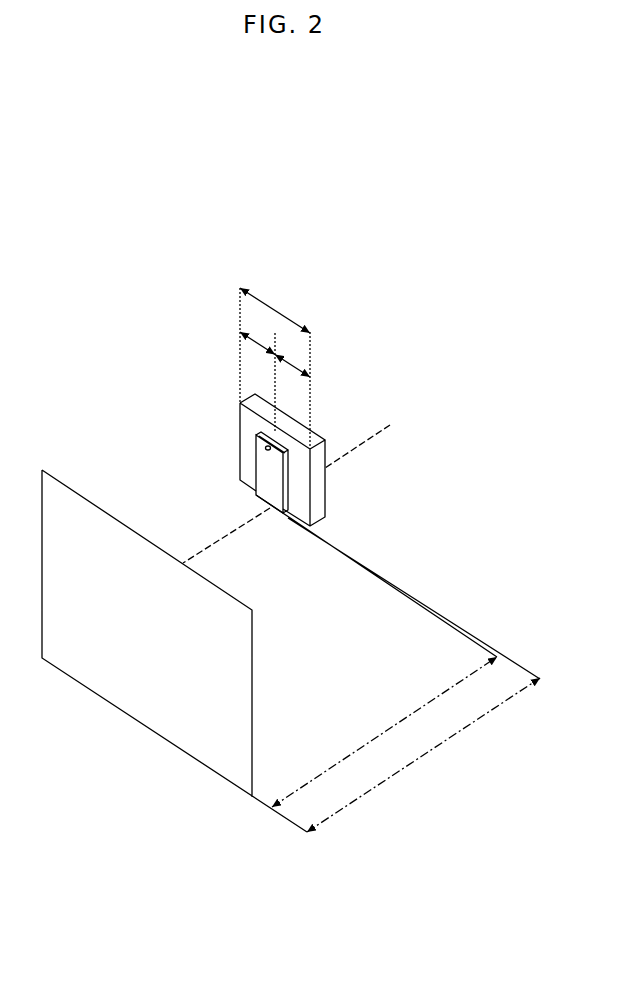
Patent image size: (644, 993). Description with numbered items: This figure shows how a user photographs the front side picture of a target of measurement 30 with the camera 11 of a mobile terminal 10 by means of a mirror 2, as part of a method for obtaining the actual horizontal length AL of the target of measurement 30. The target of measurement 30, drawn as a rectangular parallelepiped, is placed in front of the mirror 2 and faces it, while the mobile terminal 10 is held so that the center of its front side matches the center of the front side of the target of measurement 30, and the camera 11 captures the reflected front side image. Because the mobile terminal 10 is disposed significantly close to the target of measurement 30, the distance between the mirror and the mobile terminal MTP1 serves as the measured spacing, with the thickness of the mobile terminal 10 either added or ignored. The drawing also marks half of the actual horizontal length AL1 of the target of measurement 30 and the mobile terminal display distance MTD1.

The mirror 2 is at (183, 728).
The mobile terminal 10 is at (262, 467).
The camera 11 is at (263, 438).
The target of measurement 30 is at (318, 495).
The actual horizontal length AL is at (275, 310).
The half of the actual horizontal length AL1 is at (275, 349).
The distance between the mirror and the mobile terminal MTP1 is at (384, 732).
The mobile terminal display distance MTD1 is at (423, 755).